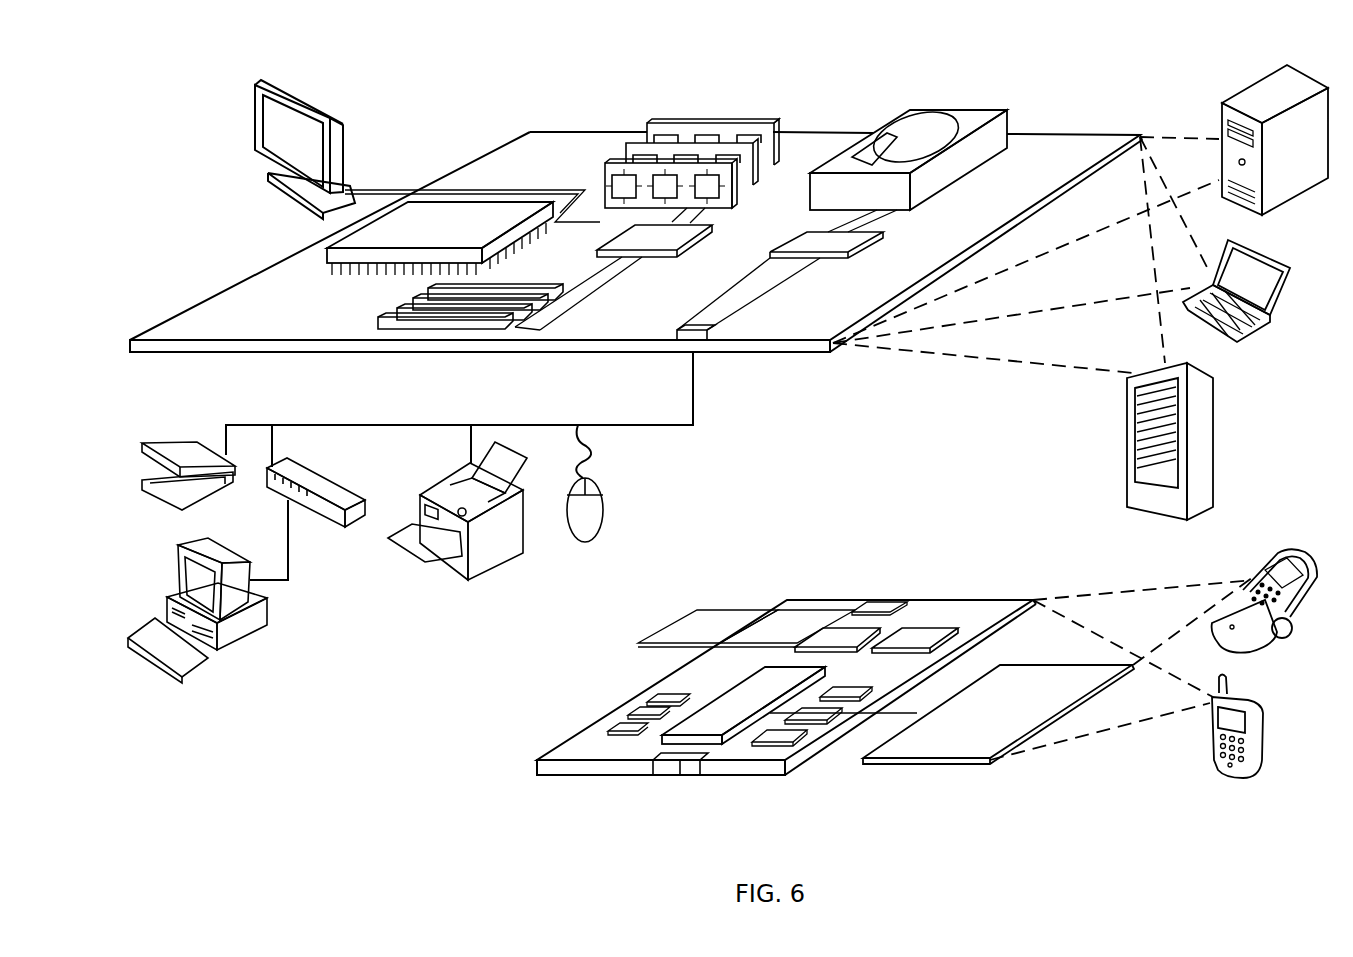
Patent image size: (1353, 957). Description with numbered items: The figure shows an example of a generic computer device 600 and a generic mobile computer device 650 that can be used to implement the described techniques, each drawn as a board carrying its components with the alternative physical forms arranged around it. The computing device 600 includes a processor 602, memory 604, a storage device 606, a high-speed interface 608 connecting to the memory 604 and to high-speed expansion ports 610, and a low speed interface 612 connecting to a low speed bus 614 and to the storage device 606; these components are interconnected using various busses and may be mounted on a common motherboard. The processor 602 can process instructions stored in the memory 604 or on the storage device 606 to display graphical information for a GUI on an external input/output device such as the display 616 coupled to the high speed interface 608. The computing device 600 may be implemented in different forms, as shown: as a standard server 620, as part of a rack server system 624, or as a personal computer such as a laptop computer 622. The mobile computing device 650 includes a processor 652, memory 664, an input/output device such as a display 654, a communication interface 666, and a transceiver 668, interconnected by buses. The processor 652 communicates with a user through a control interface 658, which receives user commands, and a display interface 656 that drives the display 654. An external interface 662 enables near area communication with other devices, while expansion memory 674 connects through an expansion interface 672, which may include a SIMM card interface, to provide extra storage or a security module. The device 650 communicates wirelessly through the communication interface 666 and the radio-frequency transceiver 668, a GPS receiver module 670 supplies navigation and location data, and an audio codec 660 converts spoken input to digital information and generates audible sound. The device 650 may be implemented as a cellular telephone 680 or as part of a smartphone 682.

The generic computer device 600 is at (453, 104).
The processor 602 is at (327, 252).
The memory 604 is at (657, 123).
The storage device 606 is at (910, 115).
The high-speed interface 608 is at (630, 235).
The high-speed expansion ports 610 is at (400, 310).
The low speed interface 612 is at (807, 242).
The low speed bus 614 is at (703, 340).
The display 616 is at (258, 82).
The standard server 620 is at (1218, 117).
The laptop computer 622 is at (1284, 265).
The rack server system 624 is at (1125, 463).
The generic mobile computer device 650 is at (511, 773).
The processor 652 is at (715, 728).
The display 654 is at (955, 747).
The display interface 656 is at (785, 737).
The control interface 658 is at (820, 713).
The audio codec 660 is at (847, 693).
The external interface 662 is at (680, 760).
The memory 664 is at (627, 720).
The communication interface 666 is at (835, 633).
The transceiver 668 is at (917, 637).
The GPS receiver module 670 is at (887, 600).
The expansion interface 672 is at (768, 612).
The expansion memory 674 is at (690, 612).
The cellular telephone 680 is at (1270, 550).
The smartphone 682 is at (1208, 733).